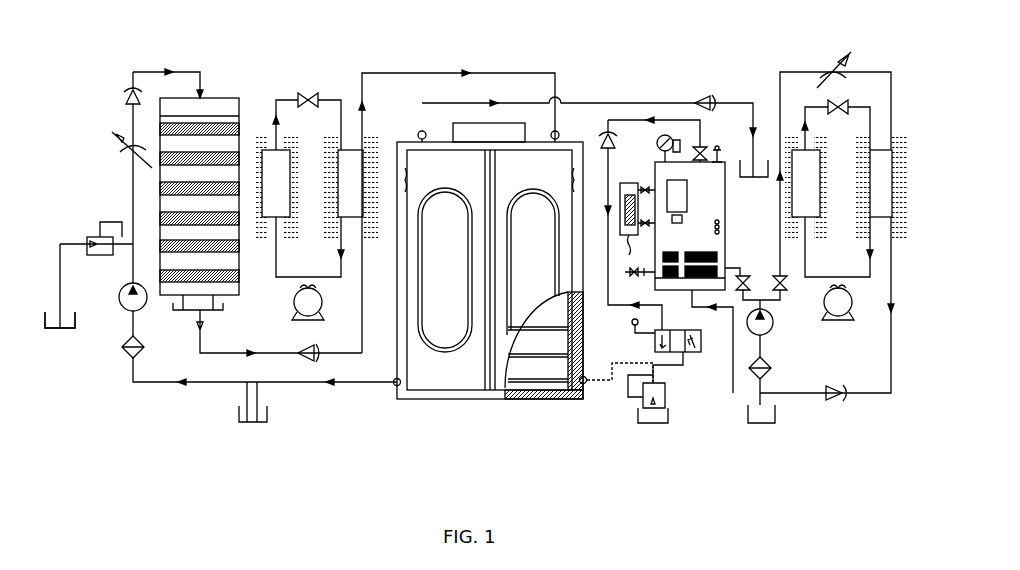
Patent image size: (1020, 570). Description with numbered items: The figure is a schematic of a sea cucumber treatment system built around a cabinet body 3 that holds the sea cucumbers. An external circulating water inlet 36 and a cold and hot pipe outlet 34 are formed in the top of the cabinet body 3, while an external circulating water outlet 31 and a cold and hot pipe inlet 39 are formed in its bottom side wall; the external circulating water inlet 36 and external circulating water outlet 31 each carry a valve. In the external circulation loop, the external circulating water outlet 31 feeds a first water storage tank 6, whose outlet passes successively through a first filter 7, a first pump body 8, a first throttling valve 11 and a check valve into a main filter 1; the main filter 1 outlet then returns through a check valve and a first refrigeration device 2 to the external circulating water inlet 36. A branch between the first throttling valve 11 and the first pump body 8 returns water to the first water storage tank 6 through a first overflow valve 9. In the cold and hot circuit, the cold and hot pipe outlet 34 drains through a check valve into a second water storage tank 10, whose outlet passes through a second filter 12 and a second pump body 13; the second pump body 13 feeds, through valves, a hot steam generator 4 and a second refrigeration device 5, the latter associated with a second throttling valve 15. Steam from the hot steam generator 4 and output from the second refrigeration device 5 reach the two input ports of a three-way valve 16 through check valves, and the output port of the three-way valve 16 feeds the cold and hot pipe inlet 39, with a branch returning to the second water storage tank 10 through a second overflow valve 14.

The main filter 1 is at (232, 100).
The first refrigeration device 2 is at (311, 93).
The cabinet body 3 is at (440, 398).
The hot steam generator 4 is at (708, 433).
The second refrigeration device 5 is at (885, 62).
The first water storage tank 6 is at (62, 331).
The first filter 7 is at (126, 352).
The first pump body 8 is at (119, 297).
The first overflow valve 9 is at (87, 241).
The second water storage tank 10 is at (668, 423).
The first throttling valve 11 is at (131, 150).
The second filter 12 is at (771, 371).
The second pump body 13 is at (771, 331).
The second overflow valve 14 is at (660, 397).
The second throttling valve 15 is at (836, 58).
The three-way valve 16 is at (633, 333).
The external circulating water outlet 31 is at (393, 385).
The cold and hot pipe outlet 34 is at (420, 130).
The external circulating water inlet 36 is at (557, 130).
The cold and hot pipe inlet 39 is at (586, 392).